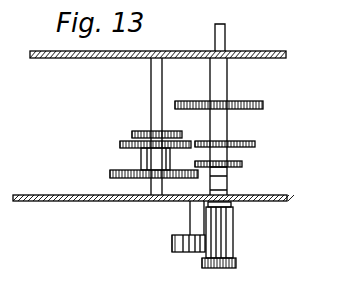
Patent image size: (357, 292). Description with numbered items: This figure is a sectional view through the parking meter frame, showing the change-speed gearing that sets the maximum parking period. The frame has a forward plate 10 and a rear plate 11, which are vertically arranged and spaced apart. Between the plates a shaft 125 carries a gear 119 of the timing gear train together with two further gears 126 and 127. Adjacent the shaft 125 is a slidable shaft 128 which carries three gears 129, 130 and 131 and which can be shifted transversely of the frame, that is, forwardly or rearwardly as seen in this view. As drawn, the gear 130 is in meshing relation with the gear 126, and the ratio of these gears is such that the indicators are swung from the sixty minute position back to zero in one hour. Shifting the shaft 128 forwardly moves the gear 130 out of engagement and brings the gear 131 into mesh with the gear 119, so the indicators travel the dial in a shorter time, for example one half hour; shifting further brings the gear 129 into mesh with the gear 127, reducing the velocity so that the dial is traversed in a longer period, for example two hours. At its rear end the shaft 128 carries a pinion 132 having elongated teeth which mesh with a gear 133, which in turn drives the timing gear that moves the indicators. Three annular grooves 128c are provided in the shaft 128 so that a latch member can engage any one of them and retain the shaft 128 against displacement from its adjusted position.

The forward plate 10 is at (275, 52).
The rear plate 11 is at (283, 201).
The gear 119 is at (121, 176).
The shaft 125 is at (151, 79).
The gear 126 is at (120, 145).
The gear 127 is at (132, 133).
The slidable shaft 128 is at (219, 36).
The annular grooves 128c is at (228, 190).
The gear 129 is at (252, 100).
The gear 130 is at (240, 141).
The gear 131 is at (244, 162).
The pinion 132 is at (233, 245).
The gear 133 is at (172, 244).